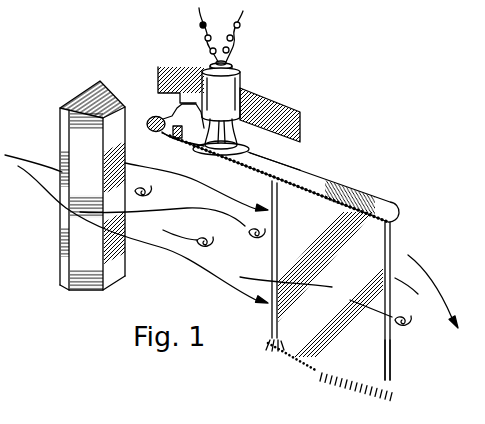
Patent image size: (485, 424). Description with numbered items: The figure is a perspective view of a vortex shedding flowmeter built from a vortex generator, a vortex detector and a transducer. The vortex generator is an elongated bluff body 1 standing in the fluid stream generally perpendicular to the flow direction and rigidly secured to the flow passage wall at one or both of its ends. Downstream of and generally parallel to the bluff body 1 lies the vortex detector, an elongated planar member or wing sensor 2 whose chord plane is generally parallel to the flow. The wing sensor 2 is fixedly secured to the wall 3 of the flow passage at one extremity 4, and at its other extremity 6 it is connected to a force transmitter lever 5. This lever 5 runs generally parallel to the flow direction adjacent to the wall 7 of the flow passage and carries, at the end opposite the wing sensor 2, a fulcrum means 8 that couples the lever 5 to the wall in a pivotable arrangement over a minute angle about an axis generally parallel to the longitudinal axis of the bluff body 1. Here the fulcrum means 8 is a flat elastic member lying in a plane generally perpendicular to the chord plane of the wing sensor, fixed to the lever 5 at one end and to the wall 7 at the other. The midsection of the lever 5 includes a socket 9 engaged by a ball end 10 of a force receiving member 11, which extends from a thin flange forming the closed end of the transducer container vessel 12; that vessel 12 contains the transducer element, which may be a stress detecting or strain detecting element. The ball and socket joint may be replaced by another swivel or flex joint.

The bluff body 1 is at (80, 153).
The wing sensor 2 is at (350, 272).
The wall of the flow passage 3 is at (340, 393).
The extremity of the wing sensor 4 is at (333, 362).
The force transmitter lever 5 is at (312, 170).
The extremity of the wing sensor 6 is at (325, 213).
The wall of the flow passage 7 is at (289, 114).
The fulcrum means 8 is at (172, 117).
The socket 9 is at (147, 136).
The ball end 10 is at (288, 148).
The force receiving member 11 is at (260, 117).
The transducer container vessel 12 is at (220, 100).